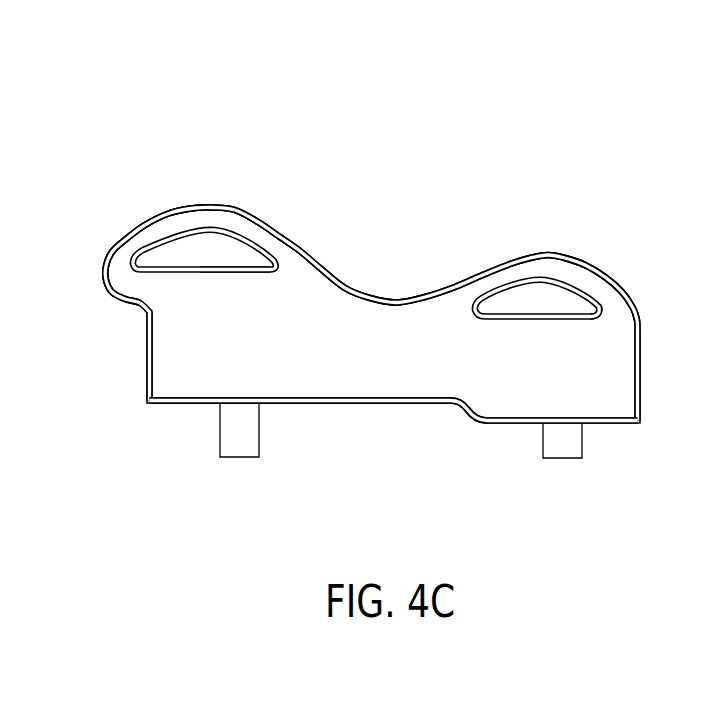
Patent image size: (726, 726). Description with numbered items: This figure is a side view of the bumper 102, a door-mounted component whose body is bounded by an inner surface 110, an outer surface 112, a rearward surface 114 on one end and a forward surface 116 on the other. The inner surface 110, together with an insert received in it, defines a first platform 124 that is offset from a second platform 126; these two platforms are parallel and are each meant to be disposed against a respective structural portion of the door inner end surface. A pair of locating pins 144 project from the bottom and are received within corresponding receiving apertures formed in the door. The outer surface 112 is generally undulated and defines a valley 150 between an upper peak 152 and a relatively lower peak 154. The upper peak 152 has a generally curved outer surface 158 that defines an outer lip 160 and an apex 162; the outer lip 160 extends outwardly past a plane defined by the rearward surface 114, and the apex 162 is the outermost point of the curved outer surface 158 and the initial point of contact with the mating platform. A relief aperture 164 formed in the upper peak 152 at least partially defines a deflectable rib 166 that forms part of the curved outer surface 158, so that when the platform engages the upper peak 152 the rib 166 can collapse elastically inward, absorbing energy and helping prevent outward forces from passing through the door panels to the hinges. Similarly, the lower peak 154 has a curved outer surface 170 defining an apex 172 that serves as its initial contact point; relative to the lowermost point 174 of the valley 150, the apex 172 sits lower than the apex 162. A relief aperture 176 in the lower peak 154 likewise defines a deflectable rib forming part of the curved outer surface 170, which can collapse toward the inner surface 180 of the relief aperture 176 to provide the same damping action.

The bumper 102 is at (545, 102).
The inner surface 110 is at (405, 417).
The outer surface 112 is at (317, 245).
The rearward surface 114 is at (146, 357).
The forward surface 116 is at (630, 363).
The first platform 124 is at (323, 403).
The second platform 126 is at (520, 423).
The locating pins 144 is at (237, 448).
The valley 150 is at (406, 258).
The upper peak 152 is at (183, 157).
The lower peak 154 is at (563, 205).
The curved outer surface 158 is at (150, 223).
The outer lip 160 is at (118, 276).
The apex 162 is at (212, 205).
The relief aperture 164 is at (183, 258).
The deflectable rib 166 is at (220, 270).
The curved outer surface 170 is at (578, 258).
The apex 172 is at (545, 253).
The lowermost point 174 is at (397, 293).
The relief aperture 176 is at (510, 303).
The inner surface 180 is at (578, 313).